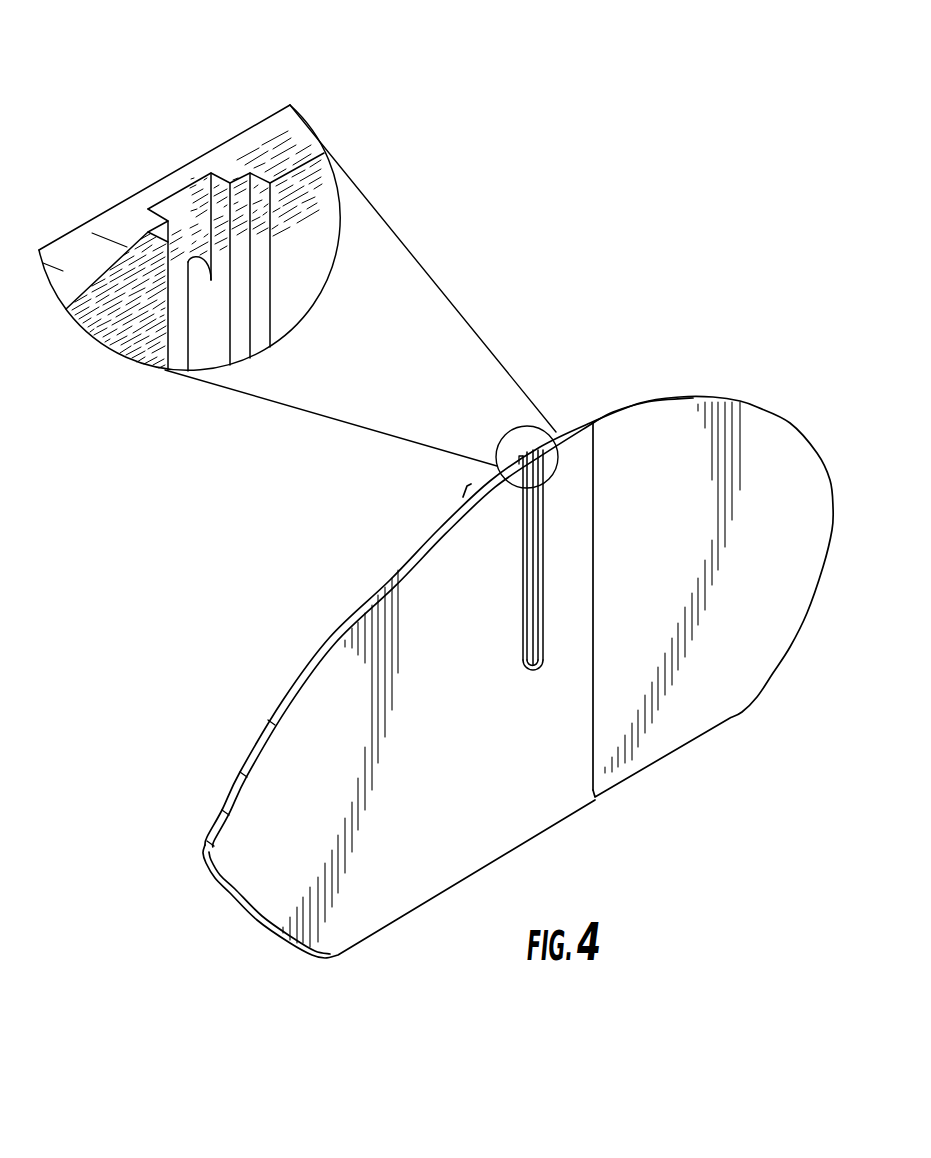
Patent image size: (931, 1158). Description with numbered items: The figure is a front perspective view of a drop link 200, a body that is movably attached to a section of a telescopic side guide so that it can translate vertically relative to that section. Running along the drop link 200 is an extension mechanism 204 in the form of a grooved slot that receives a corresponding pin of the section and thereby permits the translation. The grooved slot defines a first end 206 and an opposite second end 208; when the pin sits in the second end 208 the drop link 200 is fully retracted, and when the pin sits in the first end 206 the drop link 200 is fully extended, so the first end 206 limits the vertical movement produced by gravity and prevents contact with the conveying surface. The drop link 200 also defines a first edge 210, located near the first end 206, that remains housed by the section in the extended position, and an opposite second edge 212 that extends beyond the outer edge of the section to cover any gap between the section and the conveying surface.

The drop link 200 is at (713, 117).
The extension mechanism 204 is at (160, 352).
The first end 206 is at (177, 268).
The second end 208 is at (547, 659).
The first edge 210 is at (575, 425).
The second edge 212 is at (638, 777).